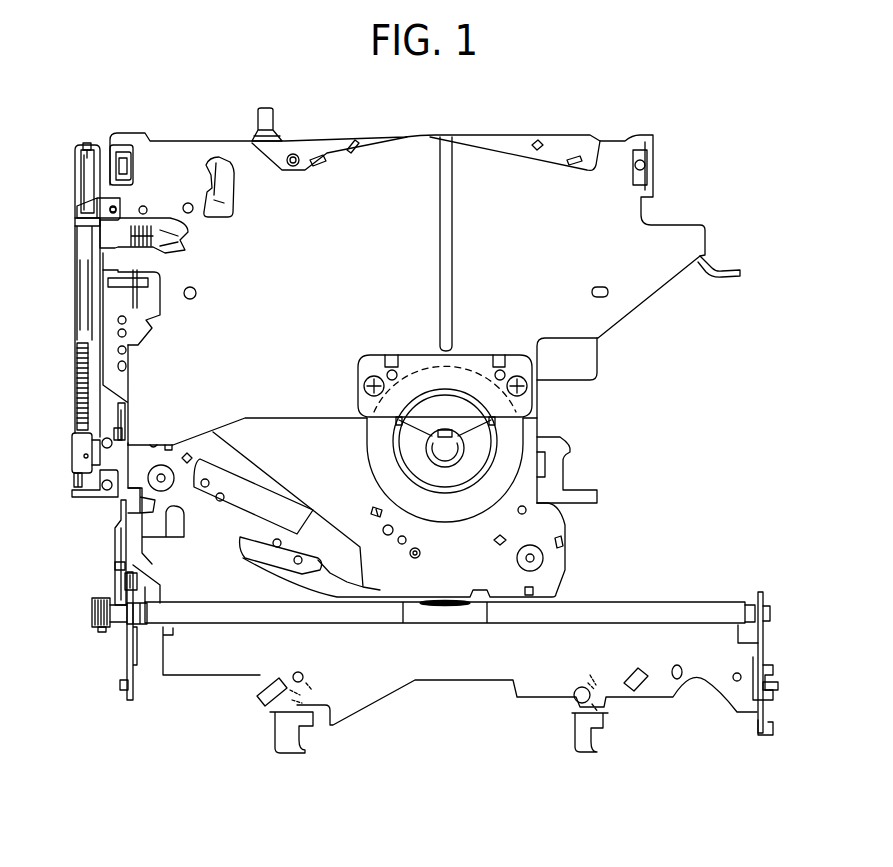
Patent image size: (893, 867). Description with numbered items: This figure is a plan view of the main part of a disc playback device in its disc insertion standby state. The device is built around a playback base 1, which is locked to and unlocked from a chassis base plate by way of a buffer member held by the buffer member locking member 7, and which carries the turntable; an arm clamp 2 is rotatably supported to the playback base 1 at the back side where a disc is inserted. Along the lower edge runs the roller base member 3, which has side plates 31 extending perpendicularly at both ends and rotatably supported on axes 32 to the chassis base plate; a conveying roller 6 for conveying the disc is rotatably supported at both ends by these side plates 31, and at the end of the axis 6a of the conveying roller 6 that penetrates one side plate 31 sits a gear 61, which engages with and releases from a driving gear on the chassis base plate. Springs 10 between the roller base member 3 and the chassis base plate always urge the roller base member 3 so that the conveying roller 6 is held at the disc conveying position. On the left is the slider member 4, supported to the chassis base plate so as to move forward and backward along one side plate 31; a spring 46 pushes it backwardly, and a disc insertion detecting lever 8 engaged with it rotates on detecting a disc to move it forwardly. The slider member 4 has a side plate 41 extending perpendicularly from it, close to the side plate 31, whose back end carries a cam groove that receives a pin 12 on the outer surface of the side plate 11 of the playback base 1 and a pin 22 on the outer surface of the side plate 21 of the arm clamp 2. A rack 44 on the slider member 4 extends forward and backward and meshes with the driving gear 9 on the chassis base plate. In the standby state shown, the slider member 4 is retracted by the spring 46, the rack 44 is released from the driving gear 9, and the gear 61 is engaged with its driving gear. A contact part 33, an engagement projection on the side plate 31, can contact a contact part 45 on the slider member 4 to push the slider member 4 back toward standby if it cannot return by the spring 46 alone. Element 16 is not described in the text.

The playback base 1 is at (558, 534).
The arm clamp 2 is at (630, 310).
The roller base member 3 is at (230, 677).
The slider member 4 is at (75, 227).
The conveying roller 6 is at (667, 602).
The axis of the conveying roller 6a is at (90, 617).
The buffer member locking member 7 is at (278, 113).
The disc insertion detecting lever 8 is at (97, 207).
The driving gear 9 is at (80, 452).
The spring 10 is at (300, 697).
The side plate of the playback base 11 is at (108, 497).
The pin 12 is at (108, 476).
The turntable unit 16 is at (523, 428).
The side plate of the arm clamp 21 is at (128, 417).
The pin 22 is at (115, 437).
The side plate 31 is at (133, 648).
The axis 32 is at (115, 687).
The contact part 33 is at (127, 582).
The side plate of the slider member 41 is at (117, 535).
The rack 44 is at (76, 361).
The contact part 45 is at (118, 567).
The spring 46 is at (88, 143).
The gear 61 is at (103, 632).